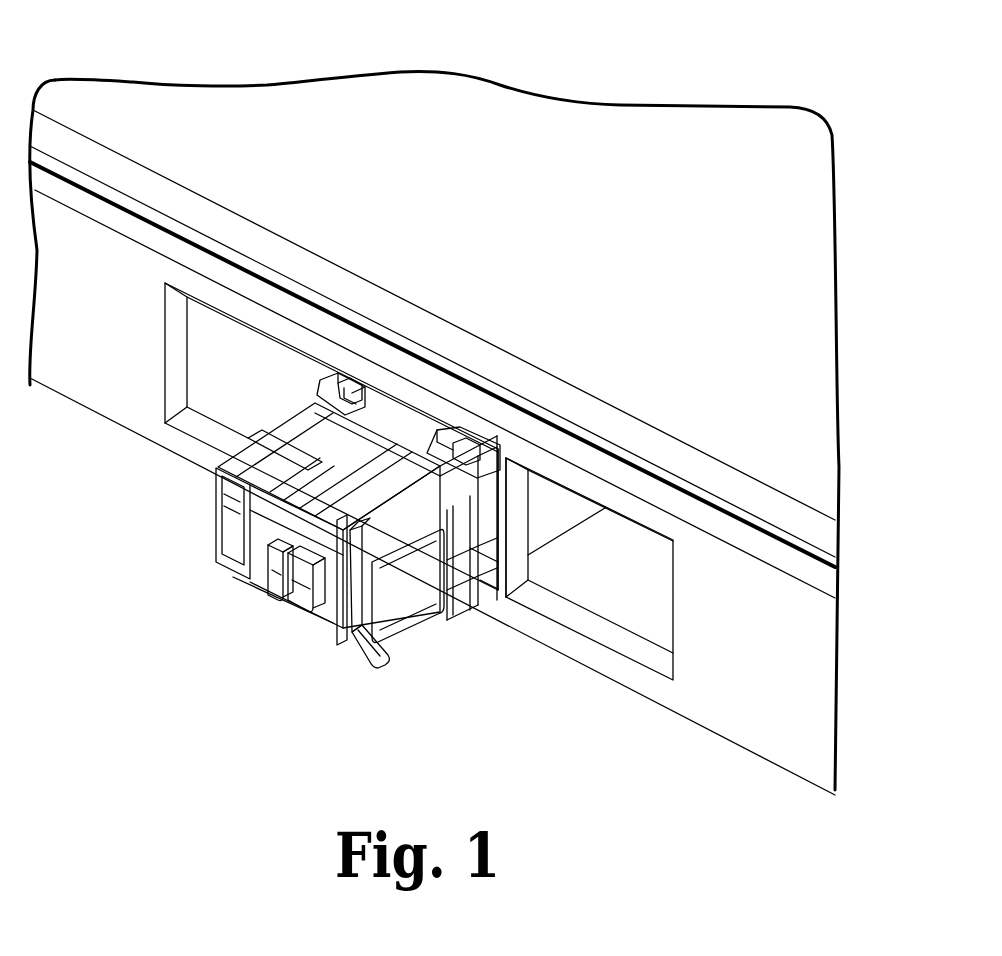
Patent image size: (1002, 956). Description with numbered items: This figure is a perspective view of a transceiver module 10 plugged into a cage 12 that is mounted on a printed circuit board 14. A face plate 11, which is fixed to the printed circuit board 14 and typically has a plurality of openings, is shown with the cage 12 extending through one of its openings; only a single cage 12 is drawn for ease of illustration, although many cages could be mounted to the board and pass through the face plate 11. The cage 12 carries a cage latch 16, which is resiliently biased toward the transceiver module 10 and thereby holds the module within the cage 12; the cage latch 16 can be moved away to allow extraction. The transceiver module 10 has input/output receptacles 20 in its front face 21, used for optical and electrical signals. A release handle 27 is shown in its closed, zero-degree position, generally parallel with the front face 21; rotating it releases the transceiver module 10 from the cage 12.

The transceiver module 10 is at (210, 537).
The face plate 11 is at (108, 322).
The cage 12 is at (484, 576).
The printed circuit board 14 is at (790, 346).
The cage latch 16 is at (410, 422).
The input/output receptacles 20 is at (323, 623).
The front face 21 is at (348, 640).
The release handle 27 is at (385, 665).